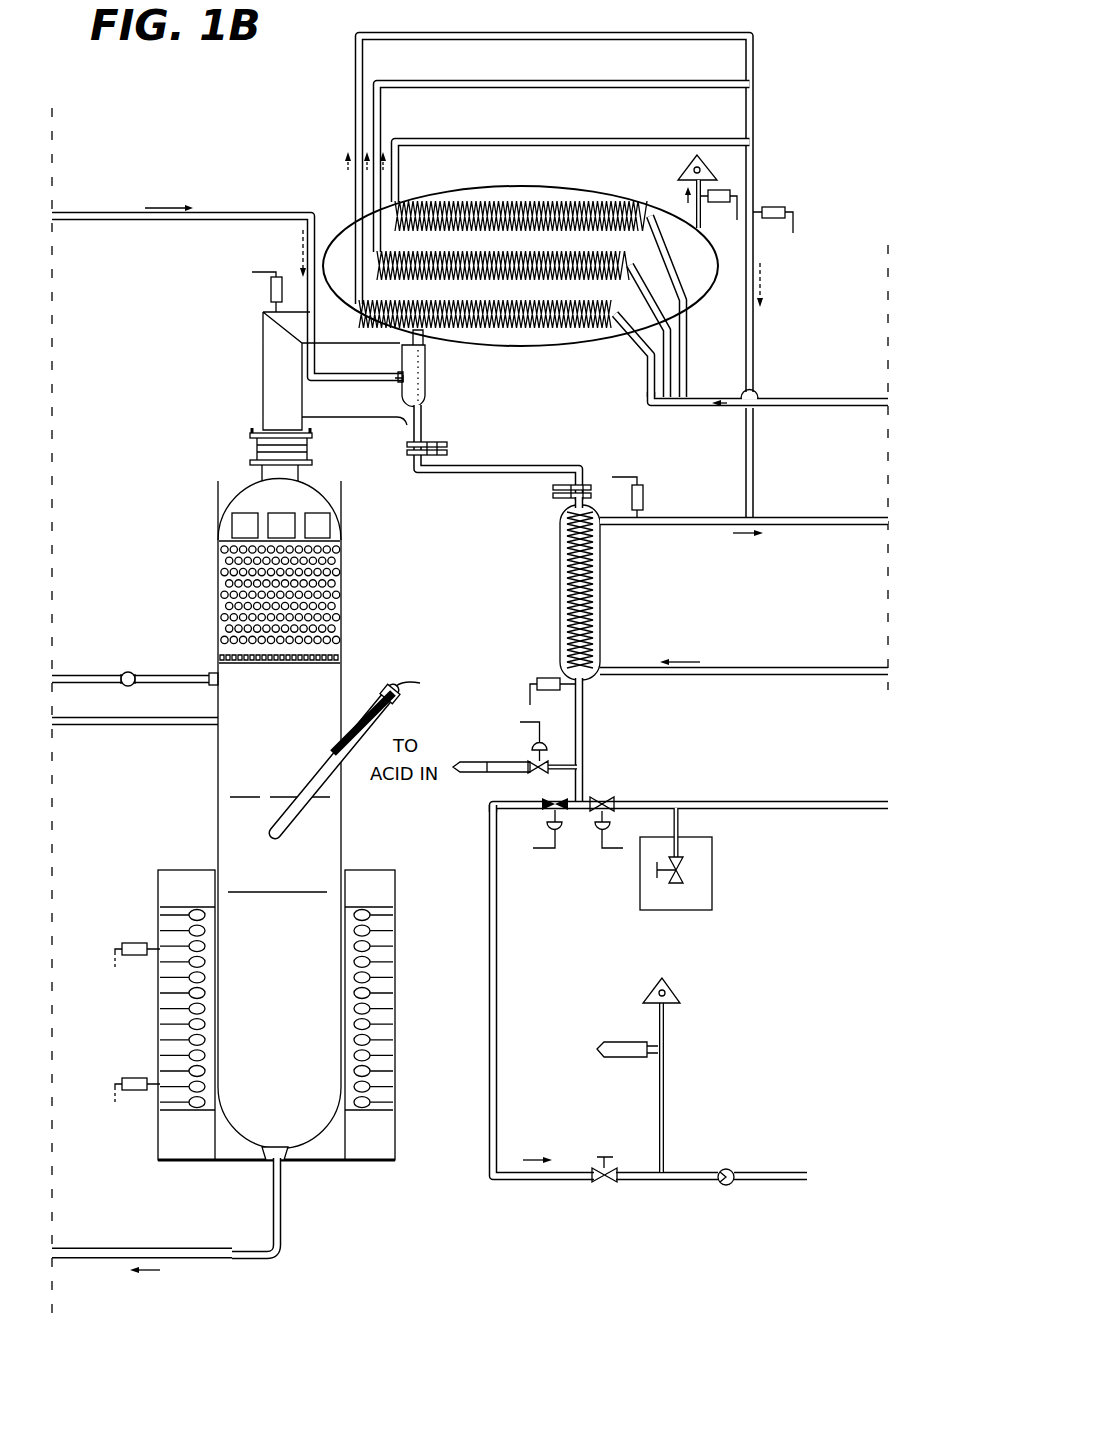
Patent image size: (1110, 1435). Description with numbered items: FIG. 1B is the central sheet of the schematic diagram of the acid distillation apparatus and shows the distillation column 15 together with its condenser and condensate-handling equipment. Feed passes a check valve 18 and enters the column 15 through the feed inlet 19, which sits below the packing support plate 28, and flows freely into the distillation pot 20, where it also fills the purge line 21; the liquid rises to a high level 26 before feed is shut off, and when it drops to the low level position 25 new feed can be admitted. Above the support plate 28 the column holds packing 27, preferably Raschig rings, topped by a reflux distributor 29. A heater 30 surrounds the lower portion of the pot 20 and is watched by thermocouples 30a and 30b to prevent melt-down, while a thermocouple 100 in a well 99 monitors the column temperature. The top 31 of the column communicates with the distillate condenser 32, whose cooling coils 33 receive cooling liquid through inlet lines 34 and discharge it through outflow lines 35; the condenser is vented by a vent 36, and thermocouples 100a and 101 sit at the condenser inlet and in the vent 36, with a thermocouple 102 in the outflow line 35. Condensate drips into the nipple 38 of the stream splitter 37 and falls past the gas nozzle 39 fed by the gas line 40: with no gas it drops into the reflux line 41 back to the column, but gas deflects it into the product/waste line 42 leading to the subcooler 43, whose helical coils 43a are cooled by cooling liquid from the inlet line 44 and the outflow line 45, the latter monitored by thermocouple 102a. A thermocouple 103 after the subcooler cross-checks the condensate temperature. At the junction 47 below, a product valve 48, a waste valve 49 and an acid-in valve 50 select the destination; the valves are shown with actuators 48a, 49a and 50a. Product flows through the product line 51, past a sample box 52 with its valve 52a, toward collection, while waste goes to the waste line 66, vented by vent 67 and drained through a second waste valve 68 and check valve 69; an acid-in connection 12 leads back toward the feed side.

The acid inlet line 12 is at (474, 757).
The distillation column 15 is at (232, 740).
The check valve 18 is at (132, 671).
The feed inlet 19 is at (210, 672).
The distillation pot 20 is at (310, 1126).
The purge line 21 is at (108, 1248).
The low level position 25 is at (246, 890).
The high level 26 is at (245, 796).
The packing 27 is at (342, 574).
The packing support plate 28 is at (342, 654).
The reflux distributor 29 is at (342, 538).
The heater 30 is at (386, 1012).
The thermocouple 30a is at (134, 942).
The thermocouple 30b is at (134, 1080).
The top of the column 31 is at (246, 490).
The distillate condenser 32 is at (425, 186).
The cooling coils 33 is at (602, 198).
The cooling liquid inlet line 34 is at (800, 396).
The outflow line 35 is at (376, 144).
The vent 36 is at (720, 174).
The stream splitter 37 is at (418, 386).
The nipple 38 is at (398, 355).
The gas nozzle 39 is at (402, 380).
The gas line 40 is at (105, 210).
The reflux line 41 is at (334, 424).
The product/waste line 42 is at (498, 466).
The subcooler 43 is at (556, 566).
The helical coils 43a is at (567, 590).
The cooling liquid inlet line 44 is at (752, 667).
The outflow line 45 is at (622, 524).
The junction 47 is at (580, 786).
The product valve 48 is at (604, 795).
The valve actuator 48a is at (599, 830).
The waste valve 49 is at (566, 813).
The valve actuator 49a is at (548, 832).
The acid-in valve 50 is at (529, 771).
The valve actuator 50a is at (550, 745).
The product line 51 is at (721, 799).
The sample box 52 is at (712, 910).
The sample valve 52a is at (696, 868).
The waste line 66 is at (487, 927).
The vent 67 is at (680, 992).
The waste valve 68 is at (610, 1184).
The check valve 69 is at (727, 1168).
The well 99 is at (322, 766).
The thermocouple 100 is at (302, 806).
The thermocouple 100a is at (266, 287).
The thermocouple 101 is at (737, 193).
The thermocouple 102 is at (788, 210).
The thermocouple 102a is at (644, 488).
The thermocouple 103 is at (539, 677).